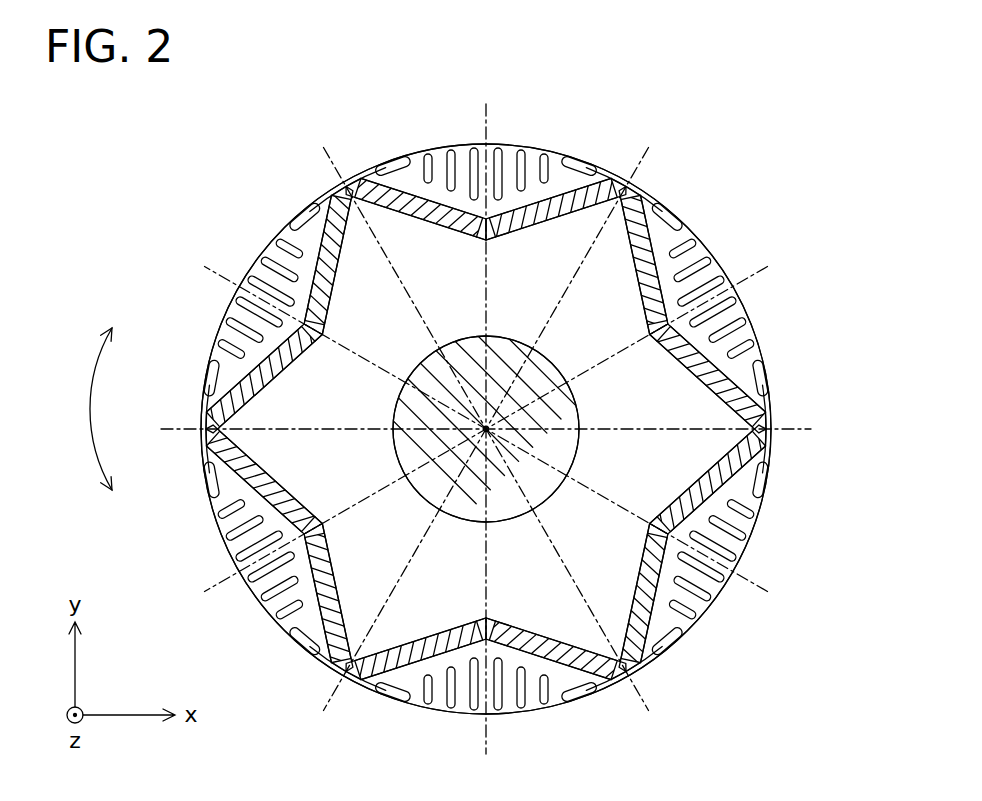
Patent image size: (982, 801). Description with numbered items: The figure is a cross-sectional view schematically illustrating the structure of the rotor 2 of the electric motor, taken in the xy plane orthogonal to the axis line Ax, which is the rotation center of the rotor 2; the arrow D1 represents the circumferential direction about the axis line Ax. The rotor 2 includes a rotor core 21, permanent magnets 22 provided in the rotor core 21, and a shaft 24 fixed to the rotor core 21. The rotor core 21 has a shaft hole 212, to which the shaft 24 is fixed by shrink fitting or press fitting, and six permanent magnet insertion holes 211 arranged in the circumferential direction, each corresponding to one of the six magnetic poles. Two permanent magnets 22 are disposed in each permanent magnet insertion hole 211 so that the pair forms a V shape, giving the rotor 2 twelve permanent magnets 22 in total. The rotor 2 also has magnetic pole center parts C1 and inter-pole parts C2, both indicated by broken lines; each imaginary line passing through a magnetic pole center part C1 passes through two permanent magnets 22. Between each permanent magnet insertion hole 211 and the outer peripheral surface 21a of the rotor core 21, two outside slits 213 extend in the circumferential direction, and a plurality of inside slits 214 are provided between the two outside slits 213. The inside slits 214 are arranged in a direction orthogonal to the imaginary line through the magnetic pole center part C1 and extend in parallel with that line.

The rotor 2 is at (207, 156).
The rotor core 21 is at (418, 158).
The outer peripheral surface 21a is at (325, 186).
The permanent magnet 22 is at (553, 215).
The permanent magnet insertion hole 211 is at (480, 232).
The shaft hole 212 is at (553, 490).
The outside slit 213 is at (584, 160).
The inside slit 214 is at (461, 164).
The shaft 24 is at (420, 418).
The axis line Ax is at (486, 432).
The magnetic pole center part C1 is at (482, 430).
The inter-pole part C2 is at (487, 427).
The circumferential direction D1 is at (88, 418).